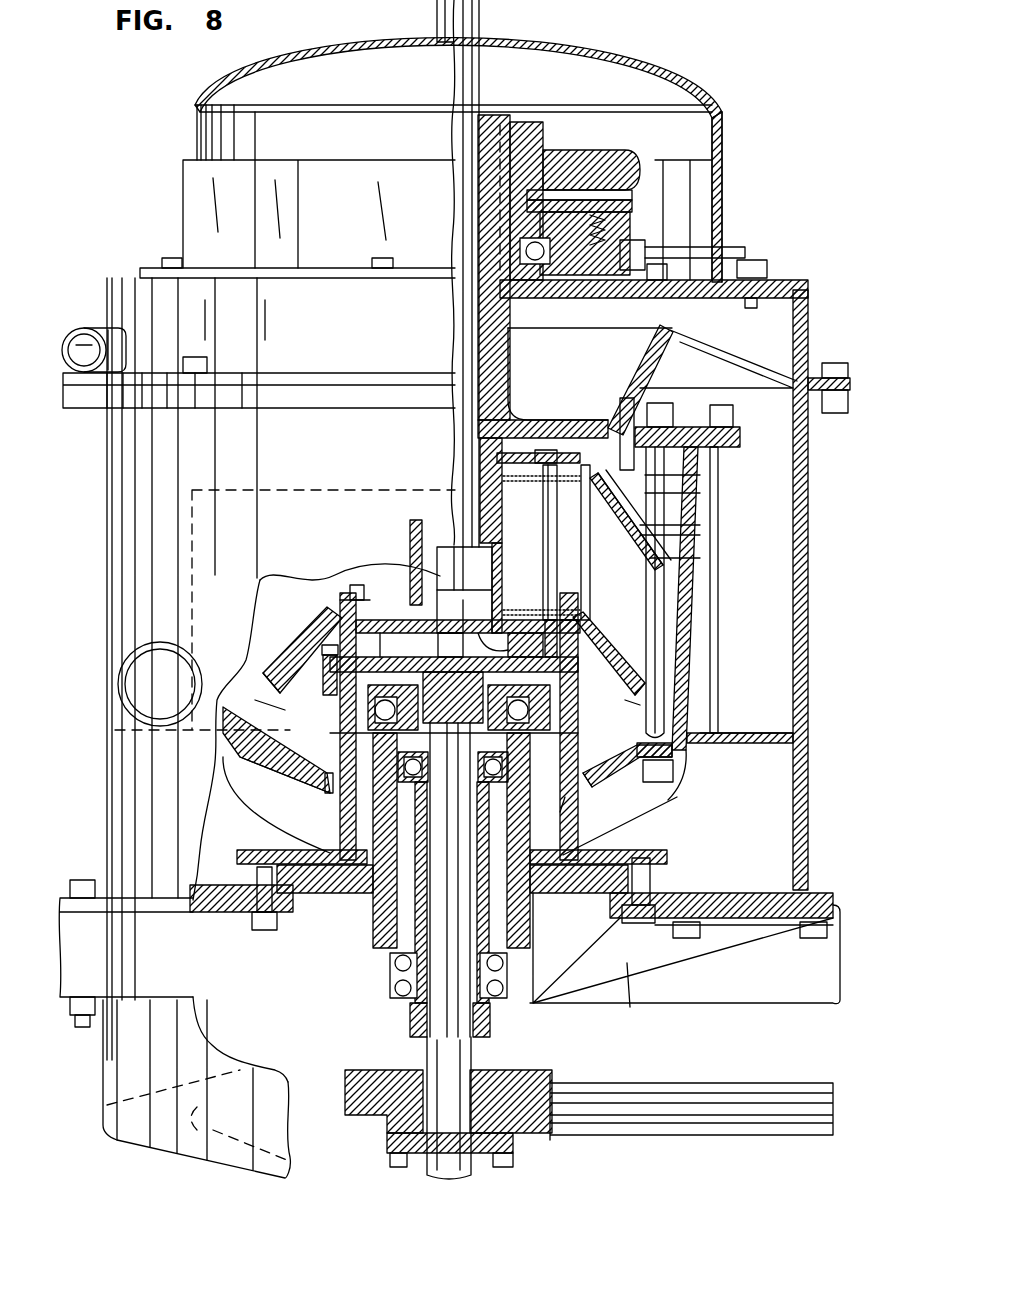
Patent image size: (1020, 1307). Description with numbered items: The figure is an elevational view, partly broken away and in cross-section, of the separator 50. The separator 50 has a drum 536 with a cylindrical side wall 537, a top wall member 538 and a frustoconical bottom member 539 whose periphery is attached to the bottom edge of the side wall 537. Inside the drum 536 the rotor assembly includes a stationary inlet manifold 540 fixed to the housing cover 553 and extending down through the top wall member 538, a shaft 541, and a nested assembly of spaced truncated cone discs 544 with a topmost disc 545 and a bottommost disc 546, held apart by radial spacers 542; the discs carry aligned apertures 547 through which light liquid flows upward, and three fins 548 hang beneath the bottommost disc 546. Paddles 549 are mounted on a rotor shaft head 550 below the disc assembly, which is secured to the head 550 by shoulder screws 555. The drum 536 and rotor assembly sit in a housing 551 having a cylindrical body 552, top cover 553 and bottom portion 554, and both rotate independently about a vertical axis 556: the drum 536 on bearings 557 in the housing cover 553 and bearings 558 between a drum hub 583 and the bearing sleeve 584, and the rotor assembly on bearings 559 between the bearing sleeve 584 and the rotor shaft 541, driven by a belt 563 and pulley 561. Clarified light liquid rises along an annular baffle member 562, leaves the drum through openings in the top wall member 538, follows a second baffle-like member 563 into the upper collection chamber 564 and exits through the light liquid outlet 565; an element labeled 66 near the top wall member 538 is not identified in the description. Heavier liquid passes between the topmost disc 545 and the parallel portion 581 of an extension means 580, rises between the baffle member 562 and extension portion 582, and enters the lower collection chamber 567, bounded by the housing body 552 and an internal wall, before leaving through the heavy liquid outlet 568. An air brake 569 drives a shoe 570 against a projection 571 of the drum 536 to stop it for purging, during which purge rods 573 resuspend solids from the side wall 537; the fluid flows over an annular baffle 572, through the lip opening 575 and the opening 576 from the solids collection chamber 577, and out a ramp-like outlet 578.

The separator 50 is at (734, 95).
The housing cover 553 is at (724, 143).
The projection 571 is at (605, 165).
The shoe 570 is at (632, 196).
The air brake 569 is at (650, 226).
The bearings 557 is at (654, 290).
The stationary inlet manifold 540 is at (453, 335).
The upper collection chamber 564 is at (757, 343).
The second baffle-like member 563 is at (650, 368).
The top wall member 538 is at (609, 281).
The pin 66 is at (625, 425).
The topmost disc 545 is at (530, 463).
The light liquid outlet 565 is at (88, 328).
The annular baffle member 562 is at (615, 457).
The extension portion 582 is at (705, 475).
The extension means 580 is at (705, 493).
The parallel portion 581 is at (695, 533).
The cylindrical body 552 is at (803, 570).
The housing 551 is at (118, 523).
The vertical axis 556 is at (437, 556).
The shoulder screws 555 is at (560, 520).
The rotor shaft 541 is at (475, 535).
The apertures 547 is at (605, 560).
The radial spacers 542 is at (618, 526).
The truncated cone discs 544 is at (638, 575).
The heavy liquid outlet 568 is at (150, 642).
The bottommost disc 546 is at (275, 665).
The rotor shaft head 550 is at (413, 612).
The paddles 549 is at (465, 650).
The lower collection chamber 567 is at (769, 620).
The cylindrical side wall 537 is at (690, 660).
The fins 548 is at (285, 712).
The bearings 558 is at (343, 720).
The frustoconical bottom member 539 is at (253, 752).
The annular baffle 572 is at (307, 778).
The lip opening 575 is at (328, 798).
The bearings 559 is at (422, 770).
The drum hub 583 is at (340, 825).
The purge rods 573 is at (672, 790).
The drum 536 is at (697, 758).
The solids collection chamber 577 is at (742, 838).
The bottom portion 554 is at (798, 858).
The opening 576 is at (717, 893).
The bearing sleeve 584 is at (372, 922).
The ramp-like outlet 578 is at (125, 1098).
The pulley 561 is at (545, 1075).